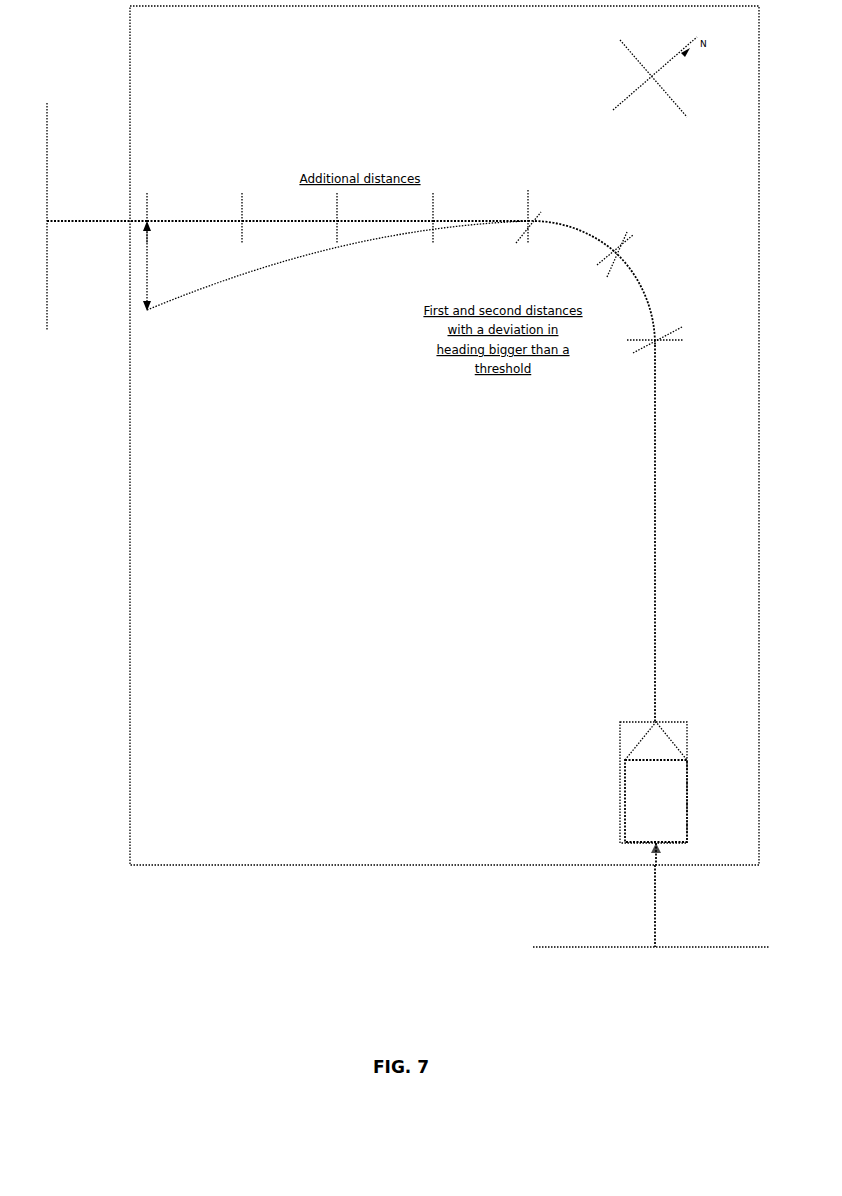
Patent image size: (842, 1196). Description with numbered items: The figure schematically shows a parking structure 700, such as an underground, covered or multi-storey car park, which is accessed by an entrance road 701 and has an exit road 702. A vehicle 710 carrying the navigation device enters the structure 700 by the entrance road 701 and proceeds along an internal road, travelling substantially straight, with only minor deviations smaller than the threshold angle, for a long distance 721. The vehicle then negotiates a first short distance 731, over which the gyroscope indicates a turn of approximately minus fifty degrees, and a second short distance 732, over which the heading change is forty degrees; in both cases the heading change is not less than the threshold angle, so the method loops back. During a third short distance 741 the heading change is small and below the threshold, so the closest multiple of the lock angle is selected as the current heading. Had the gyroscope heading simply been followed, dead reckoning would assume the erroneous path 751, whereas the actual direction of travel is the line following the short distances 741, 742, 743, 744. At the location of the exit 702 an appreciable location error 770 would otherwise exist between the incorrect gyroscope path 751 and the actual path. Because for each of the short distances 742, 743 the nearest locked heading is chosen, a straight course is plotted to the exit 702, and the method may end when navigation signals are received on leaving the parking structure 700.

The parking structure 700 is at (444, 435).
The exit road 702 is at (97, 216).
The short distance 744 is at (194, 218).
The short distance 743 is at (289, 218).
The short distance 742 is at (385, 218).
The third short distance 741 is at (487, 216).
The location error 770 is at (199, 266).
The assumed path 751 is at (337, 265).
The second short distance 732 is at (580, 249).
The first short distance 731 is at (643, 302).
The long distance 721 is at (569, 533).
The vehicle 710 is at (615, 793).
The entrance road 701 is at (651, 906).